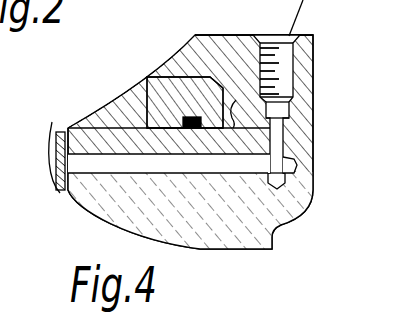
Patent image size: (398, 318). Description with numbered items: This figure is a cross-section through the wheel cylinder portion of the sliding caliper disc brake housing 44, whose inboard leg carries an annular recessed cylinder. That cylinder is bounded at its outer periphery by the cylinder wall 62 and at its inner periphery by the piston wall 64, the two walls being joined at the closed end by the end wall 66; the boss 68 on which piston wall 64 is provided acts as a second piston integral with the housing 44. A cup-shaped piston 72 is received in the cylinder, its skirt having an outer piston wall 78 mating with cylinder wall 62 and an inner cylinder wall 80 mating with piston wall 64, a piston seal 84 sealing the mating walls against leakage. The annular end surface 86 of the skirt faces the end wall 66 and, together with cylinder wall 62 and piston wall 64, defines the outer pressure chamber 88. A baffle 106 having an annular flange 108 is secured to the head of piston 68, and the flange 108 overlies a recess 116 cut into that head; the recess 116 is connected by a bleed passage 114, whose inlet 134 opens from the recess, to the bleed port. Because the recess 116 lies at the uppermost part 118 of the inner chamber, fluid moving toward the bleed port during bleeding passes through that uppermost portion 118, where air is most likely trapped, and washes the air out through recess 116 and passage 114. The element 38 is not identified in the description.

The housing body 38 is at (283, 225).
The housing 44 is at (202, 48).
The cylinder wall 62 is at (152, 78).
The piston wall 64 is at (136, 128).
The end wall 66 is at (233, 96).
The boss 68 is at (230, 232).
The cup-shaped piston 72 is at (92, 100).
The piston wall 78 is at (185, 102).
The cylinder wall 80 is at (84, 128).
The piston seal 84 is at (185, 120).
The annular end surface 86 is at (231, 82).
The outer pressure chamber 88 is at (231, 82).
The baffle 106 is at (60, 193).
The annular flange 108 is at (55, 150).
The passage 114 is at (168, 167).
The recess 116 is at (63, 189).
The uppermost part 118 is at (66, 128).
The inlet 134 is at (76, 165).